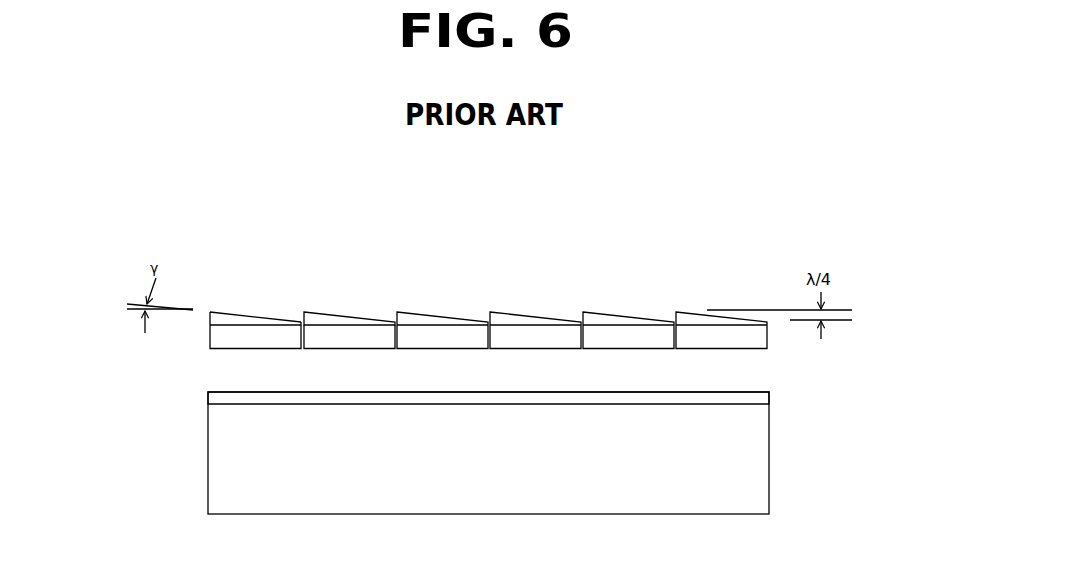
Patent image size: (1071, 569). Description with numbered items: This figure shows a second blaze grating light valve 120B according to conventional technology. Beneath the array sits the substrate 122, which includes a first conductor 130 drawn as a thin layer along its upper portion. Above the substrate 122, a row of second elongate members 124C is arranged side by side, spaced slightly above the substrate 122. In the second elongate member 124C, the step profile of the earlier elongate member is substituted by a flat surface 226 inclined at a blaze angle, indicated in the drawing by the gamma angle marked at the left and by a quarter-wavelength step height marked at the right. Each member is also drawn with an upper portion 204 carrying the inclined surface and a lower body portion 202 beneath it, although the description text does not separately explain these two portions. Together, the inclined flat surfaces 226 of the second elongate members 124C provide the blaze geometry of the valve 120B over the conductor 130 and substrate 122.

The second blaze grating light valve 120B is at (694, 238).
The second elongate member 124C is at (210, 333).
The flat surface 226 is at (245, 315).
The inclined upper portion 204 is at (330, 318).
The base portion 202 is at (335, 347).
The first conductor 130 is at (766, 395).
The substrate 122 is at (525, 467).